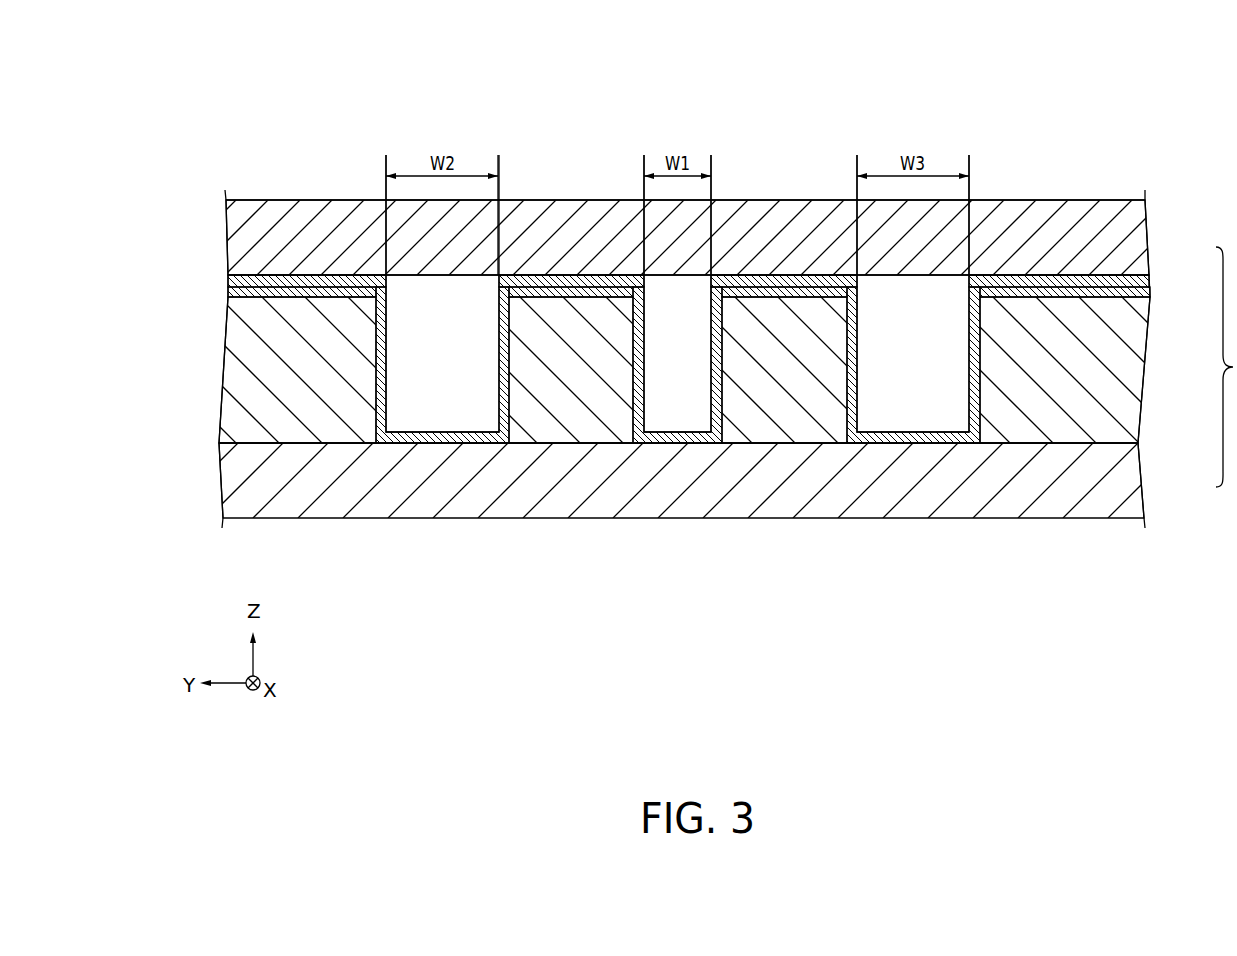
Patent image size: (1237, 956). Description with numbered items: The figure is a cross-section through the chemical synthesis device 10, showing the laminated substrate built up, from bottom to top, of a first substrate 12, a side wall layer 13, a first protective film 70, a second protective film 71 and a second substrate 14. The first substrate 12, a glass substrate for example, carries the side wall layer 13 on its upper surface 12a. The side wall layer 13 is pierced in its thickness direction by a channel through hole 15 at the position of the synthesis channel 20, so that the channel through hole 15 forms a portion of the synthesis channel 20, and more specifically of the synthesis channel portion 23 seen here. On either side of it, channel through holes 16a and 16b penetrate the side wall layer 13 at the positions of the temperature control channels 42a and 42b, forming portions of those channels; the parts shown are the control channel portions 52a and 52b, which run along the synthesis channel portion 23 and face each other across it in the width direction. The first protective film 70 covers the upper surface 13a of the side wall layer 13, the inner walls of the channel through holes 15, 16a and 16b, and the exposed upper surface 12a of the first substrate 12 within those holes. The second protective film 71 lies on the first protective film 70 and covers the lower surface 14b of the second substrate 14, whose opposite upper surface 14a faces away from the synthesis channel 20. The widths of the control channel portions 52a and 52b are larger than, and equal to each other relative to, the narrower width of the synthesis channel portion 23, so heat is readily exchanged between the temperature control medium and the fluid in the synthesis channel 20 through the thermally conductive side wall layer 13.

The liquid ejecting head 10 is at (642, 315).
The first substrate 12 is at (1132, 480).
The upper surface of the first substrate 12a is at (1072, 443).
The side wall layer 13 is at (1135, 377).
The upper surface of the side wall layer 13a is at (250, 290).
The second substrate 14 is at (1145, 255).
The upper surface of the second substrate 14a is at (1093, 200).
The lower surface of the second substrate 14b is at (1015, 288).
The channel through hole 15 is at (638, 408).
The channel through hole 16a is at (385, 398).
The channel through hole 16b is at (856, 404).
The synthesis channel 20 is at (695, 406).
The synthesis channel portion 23 is at (695, 370).
The temperature control channel 42a is at (445, 406).
The temperature control channel 42b is at (942, 406).
The control channel portion 52a is at (449, 370).
The control channel portion 52b is at (932, 370).
The first protective film 70 is at (720, 439).
The second protective film 71 is at (1140, 281).